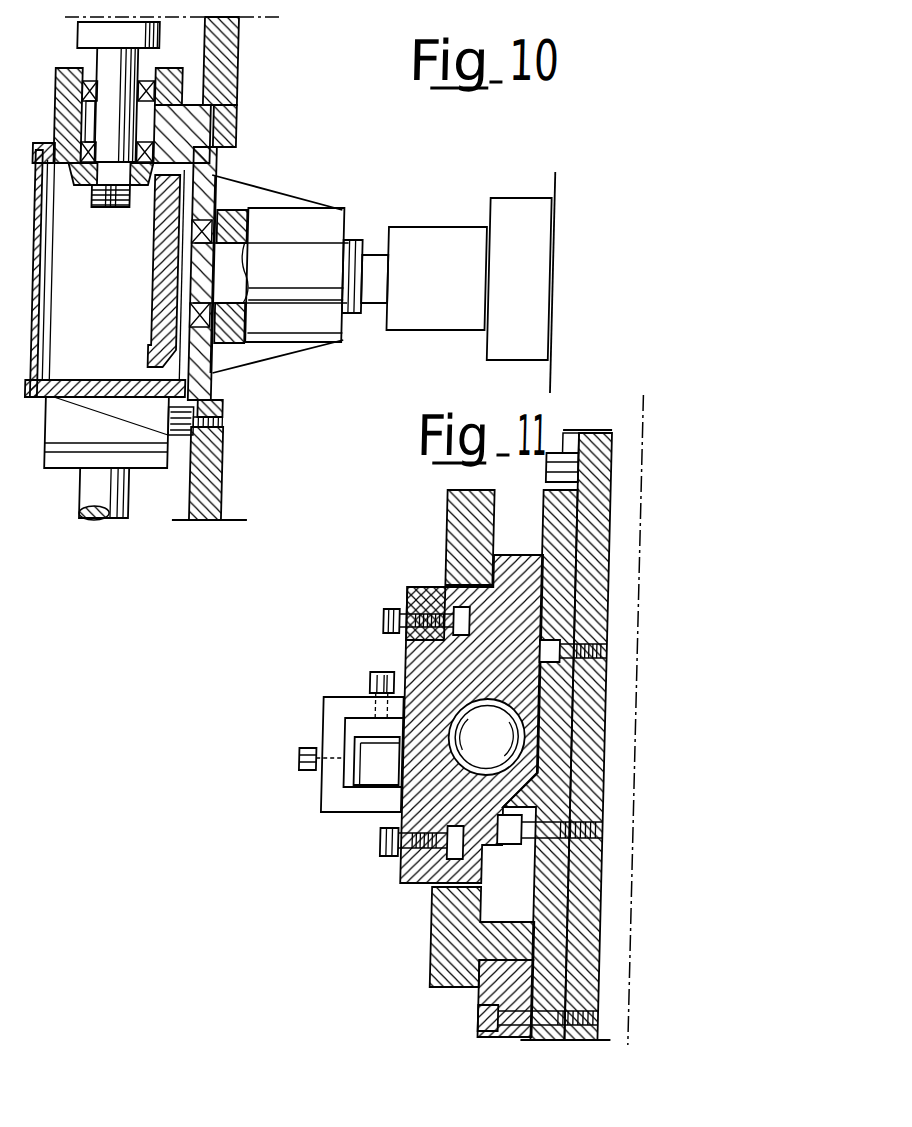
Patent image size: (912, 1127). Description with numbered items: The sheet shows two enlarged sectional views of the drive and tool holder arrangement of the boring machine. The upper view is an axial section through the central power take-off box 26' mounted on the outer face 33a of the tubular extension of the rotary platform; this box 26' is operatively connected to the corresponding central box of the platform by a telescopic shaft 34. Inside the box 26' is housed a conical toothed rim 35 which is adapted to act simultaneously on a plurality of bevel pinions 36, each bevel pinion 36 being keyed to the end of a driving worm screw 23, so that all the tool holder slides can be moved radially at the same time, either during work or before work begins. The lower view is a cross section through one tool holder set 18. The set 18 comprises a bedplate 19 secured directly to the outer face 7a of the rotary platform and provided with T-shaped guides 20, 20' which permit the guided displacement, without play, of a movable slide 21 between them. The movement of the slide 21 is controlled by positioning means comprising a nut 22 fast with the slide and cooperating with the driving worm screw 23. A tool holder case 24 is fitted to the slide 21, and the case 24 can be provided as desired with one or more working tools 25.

In FIG. 11, the outer face of the rotary platform 7a is at (603, 552).
In FIG. 11, the tool holder set 18 is at (420, 960).
In FIG. 11, the bedplate 19 is at (544, 978).
In FIG. 11, the T-shaped guide 20 is at (449, 935).
In FIG. 11, the T-shaped guide 20' is at (437, 537).
In FIG. 11, the movable slide 21 is at (443, 588).
In FIG. 11, the nut 22 is at (530, 730).
In FIG. 10, the driving worm screw 23 is at (110, 23).
In FIG. 11, the driving worm screw 23 is at (479, 727).
In FIG. 11, the tool holder case 24 is at (336, 702).
In FIG. 11, the working tool 25 is at (378, 778).
In FIG. 10, the central power take-off box 26' is at (114, 335).
In FIG. 10, the outer face of the tubular extension 33a is at (236, 52).
In FIG. 10, the telescopic shaft 34 is at (425, 250).
In FIG. 10, the conical toothed rim 35 is at (165, 322).
In FIG. 10, the bevel pinion 36 is at (90, 187).